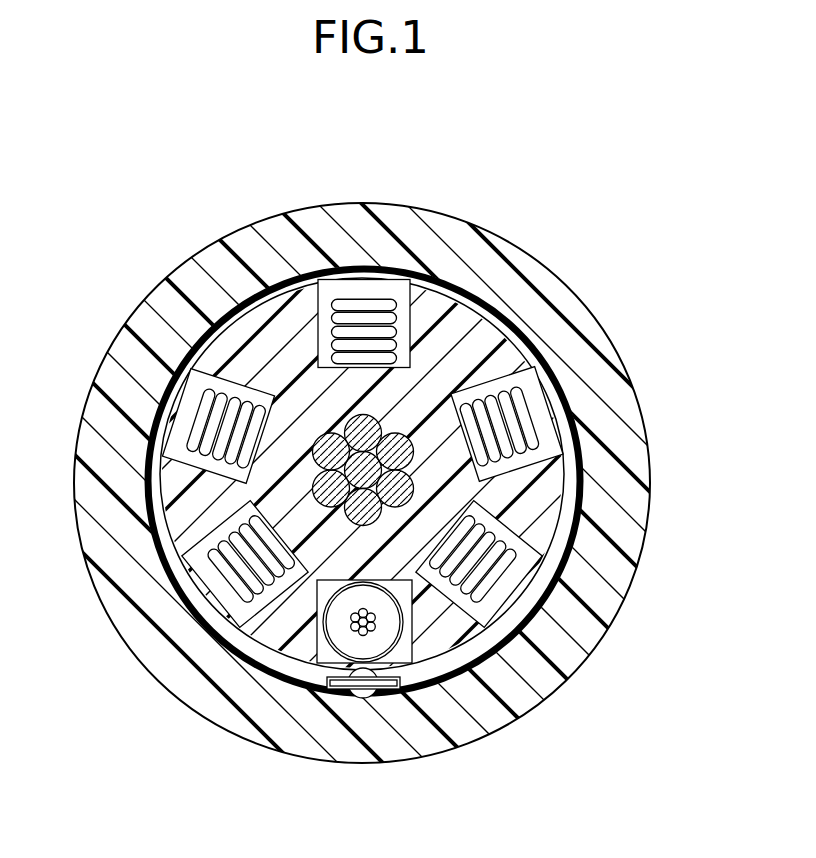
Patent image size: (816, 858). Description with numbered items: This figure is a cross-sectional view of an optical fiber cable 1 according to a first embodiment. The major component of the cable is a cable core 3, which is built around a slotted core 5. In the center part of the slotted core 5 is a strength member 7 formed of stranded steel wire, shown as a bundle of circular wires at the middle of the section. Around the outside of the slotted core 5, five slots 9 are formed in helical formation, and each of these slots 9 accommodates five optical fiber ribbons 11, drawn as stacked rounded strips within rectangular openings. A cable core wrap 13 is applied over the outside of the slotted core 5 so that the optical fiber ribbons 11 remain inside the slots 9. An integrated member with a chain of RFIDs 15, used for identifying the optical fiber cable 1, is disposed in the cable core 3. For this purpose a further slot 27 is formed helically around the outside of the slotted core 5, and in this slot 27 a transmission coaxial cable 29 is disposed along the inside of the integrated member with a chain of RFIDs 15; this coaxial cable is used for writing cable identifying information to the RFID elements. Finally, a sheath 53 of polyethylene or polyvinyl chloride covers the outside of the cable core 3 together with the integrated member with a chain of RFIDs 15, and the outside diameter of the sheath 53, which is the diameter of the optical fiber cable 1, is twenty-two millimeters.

The optical fiber cable 1 is at (408, 479).
The cable core 3 is at (222, 308).
The slotted core 5 is at (547, 497).
The strength member 7 is at (350, 423).
The slots 9 is at (405, 297).
The optical fiber ribbons 11 is at (358, 300).
The cable core wrap 13 is at (237, 657).
The integrated member with a chain of RFIDs 15 is at (365, 692).
The slot 27 is at (347, 706).
The transmission coaxial cable 29 is at (343, 633).
The sheath 53 is at (122, 340).